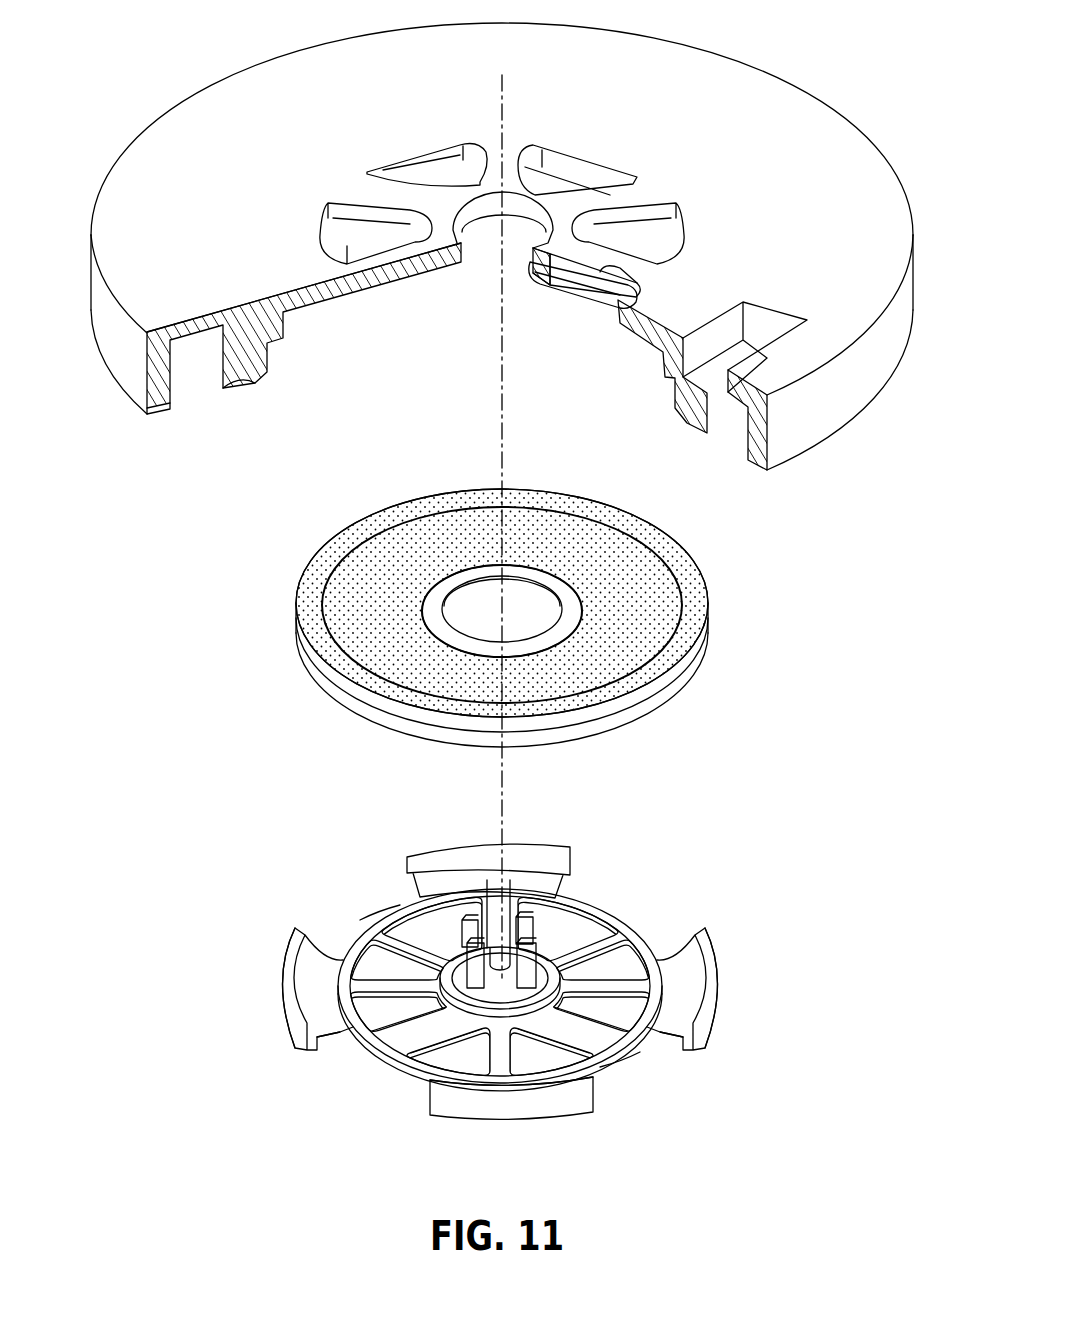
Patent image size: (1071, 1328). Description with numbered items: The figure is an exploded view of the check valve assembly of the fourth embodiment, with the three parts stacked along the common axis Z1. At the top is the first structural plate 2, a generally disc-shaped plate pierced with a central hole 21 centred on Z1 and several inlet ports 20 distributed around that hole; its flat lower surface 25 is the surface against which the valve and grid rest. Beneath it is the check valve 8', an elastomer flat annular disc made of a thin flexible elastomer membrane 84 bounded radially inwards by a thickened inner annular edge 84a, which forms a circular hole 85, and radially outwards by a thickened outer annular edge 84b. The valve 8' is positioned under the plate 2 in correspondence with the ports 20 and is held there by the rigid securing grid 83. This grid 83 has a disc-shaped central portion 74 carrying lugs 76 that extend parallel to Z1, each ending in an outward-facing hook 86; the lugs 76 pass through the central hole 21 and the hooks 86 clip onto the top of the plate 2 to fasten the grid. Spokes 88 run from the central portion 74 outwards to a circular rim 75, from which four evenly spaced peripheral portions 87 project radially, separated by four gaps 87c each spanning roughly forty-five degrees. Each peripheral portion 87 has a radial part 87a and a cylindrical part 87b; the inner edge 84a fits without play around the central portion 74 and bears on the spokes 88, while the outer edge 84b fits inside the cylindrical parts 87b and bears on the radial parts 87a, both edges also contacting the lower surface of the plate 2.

The first structural plate 2 is at (852, 70).
The axis Z1 is at (512, 101).
The inlet ports 20 is at (385, 245).
The central hole 21 is at (527, 216).
The lower surface 25 is at (333, 303).
The check valve 8' is at (502, 576).
The flexible elastomer membrane 84 is at (665, 612).
The thickened inner annular edge 84a is at (562, 590).
The thickened outer annular edge 84b is at (666, 548).
The circular hole 85 is at (523, 585).
The securing grid 83 is at (430, 842).
The spokes 88 is at (430, 945).
The hook 86 is at (525, 928).
The peripheral portions 87 is at (537, 842).
The radial part 87a is at (668, 947).
The cylindrical part 87b is at (290, 964).
The gaps 87c is at (365, 908).
The lugs 76 is at (473, 973).
The circular rim 75 is at (417, 1068).
The central portion 74 is at (607, 1052).